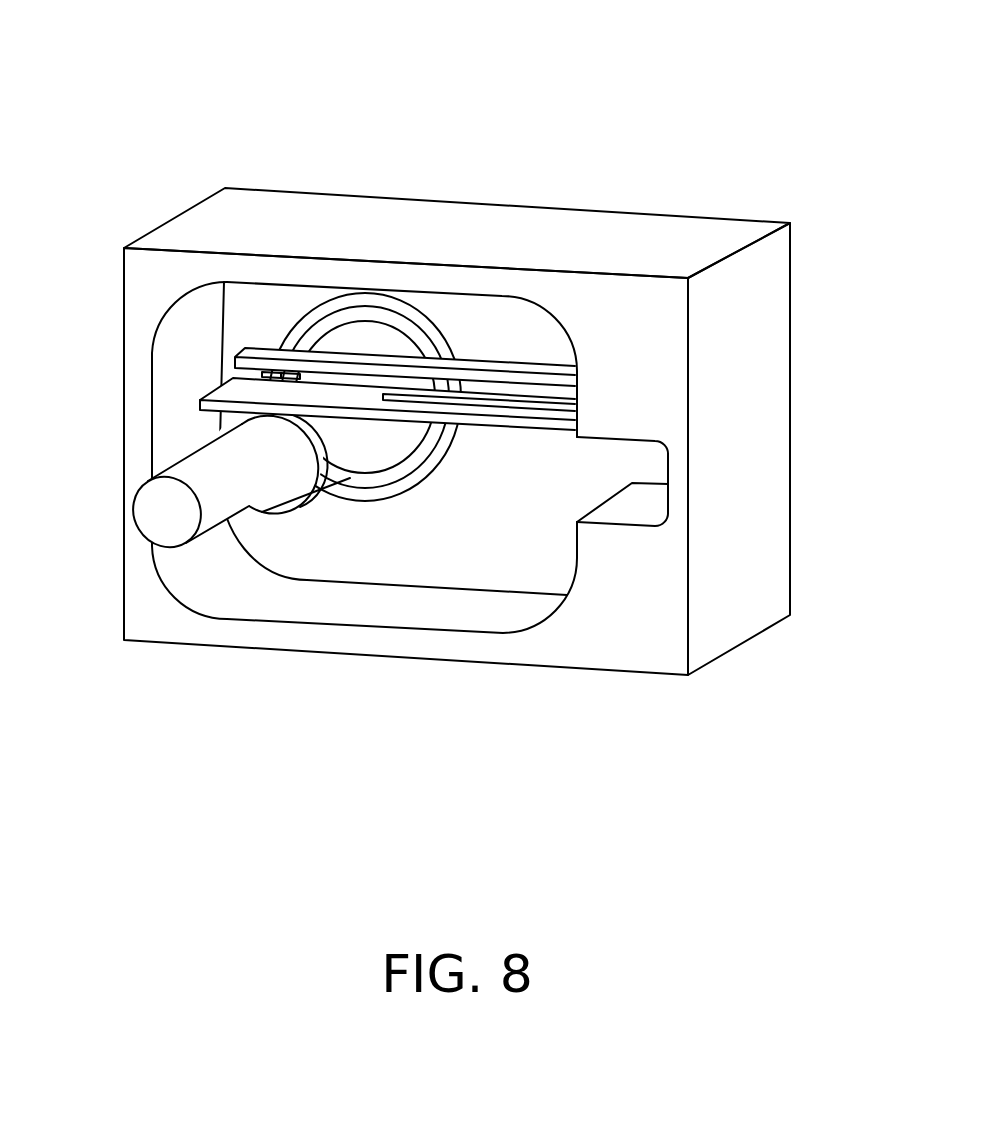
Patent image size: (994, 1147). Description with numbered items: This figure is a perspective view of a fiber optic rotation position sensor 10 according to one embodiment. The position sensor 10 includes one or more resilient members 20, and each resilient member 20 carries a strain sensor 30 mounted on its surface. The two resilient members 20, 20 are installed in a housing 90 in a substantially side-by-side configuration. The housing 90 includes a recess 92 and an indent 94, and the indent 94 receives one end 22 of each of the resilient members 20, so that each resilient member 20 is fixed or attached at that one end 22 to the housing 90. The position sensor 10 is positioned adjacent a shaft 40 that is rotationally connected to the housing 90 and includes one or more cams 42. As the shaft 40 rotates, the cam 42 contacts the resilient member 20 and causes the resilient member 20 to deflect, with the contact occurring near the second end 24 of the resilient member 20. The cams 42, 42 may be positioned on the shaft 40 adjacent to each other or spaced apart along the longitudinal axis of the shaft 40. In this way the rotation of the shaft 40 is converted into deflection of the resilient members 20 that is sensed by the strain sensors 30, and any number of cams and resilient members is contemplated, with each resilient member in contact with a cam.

The position sensor 10 is at (466, 384).
The resilient member 20 is at (312, 277).
The one end 22 is at (588, 457).
The second end 24 is at (197, 397).
The strain sensor 30 is at (388, 395).
The shaft 40 is at (187, 473).
The cam 42 is at (338, 458).
The housing 90 is at (740, 330).
The recess 92 is at (530, 537).
The indent 94 is at (627, 477).